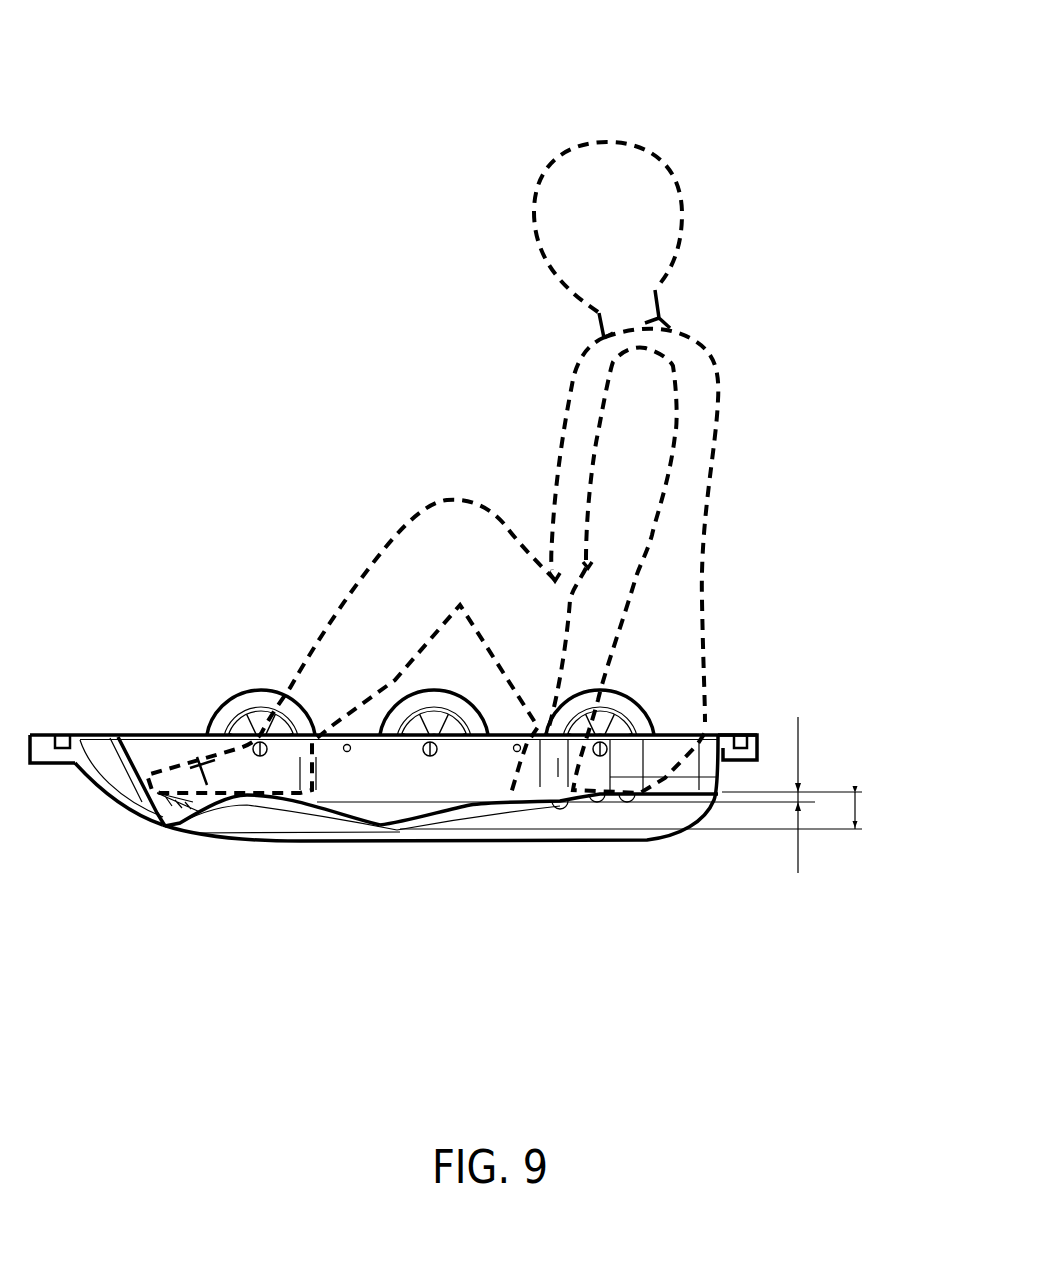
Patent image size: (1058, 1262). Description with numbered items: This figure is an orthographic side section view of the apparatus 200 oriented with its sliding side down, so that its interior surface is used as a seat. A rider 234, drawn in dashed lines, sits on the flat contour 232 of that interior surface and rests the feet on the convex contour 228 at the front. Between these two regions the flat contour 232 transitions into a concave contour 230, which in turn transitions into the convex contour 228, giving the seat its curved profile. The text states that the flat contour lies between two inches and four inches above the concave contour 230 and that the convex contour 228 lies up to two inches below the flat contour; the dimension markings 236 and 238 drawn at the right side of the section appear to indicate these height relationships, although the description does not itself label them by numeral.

The apparatus 200 is at (182, 43).
The convex contour 228 is at (237, 784).
The concave contour 230 is at (383, 817).
The flat contour 232 is at (673, 784).
The rider 234 is at (737, 368).
The seat height 236 is at (799, 730).
The seat depth 238 is at (858, 806).